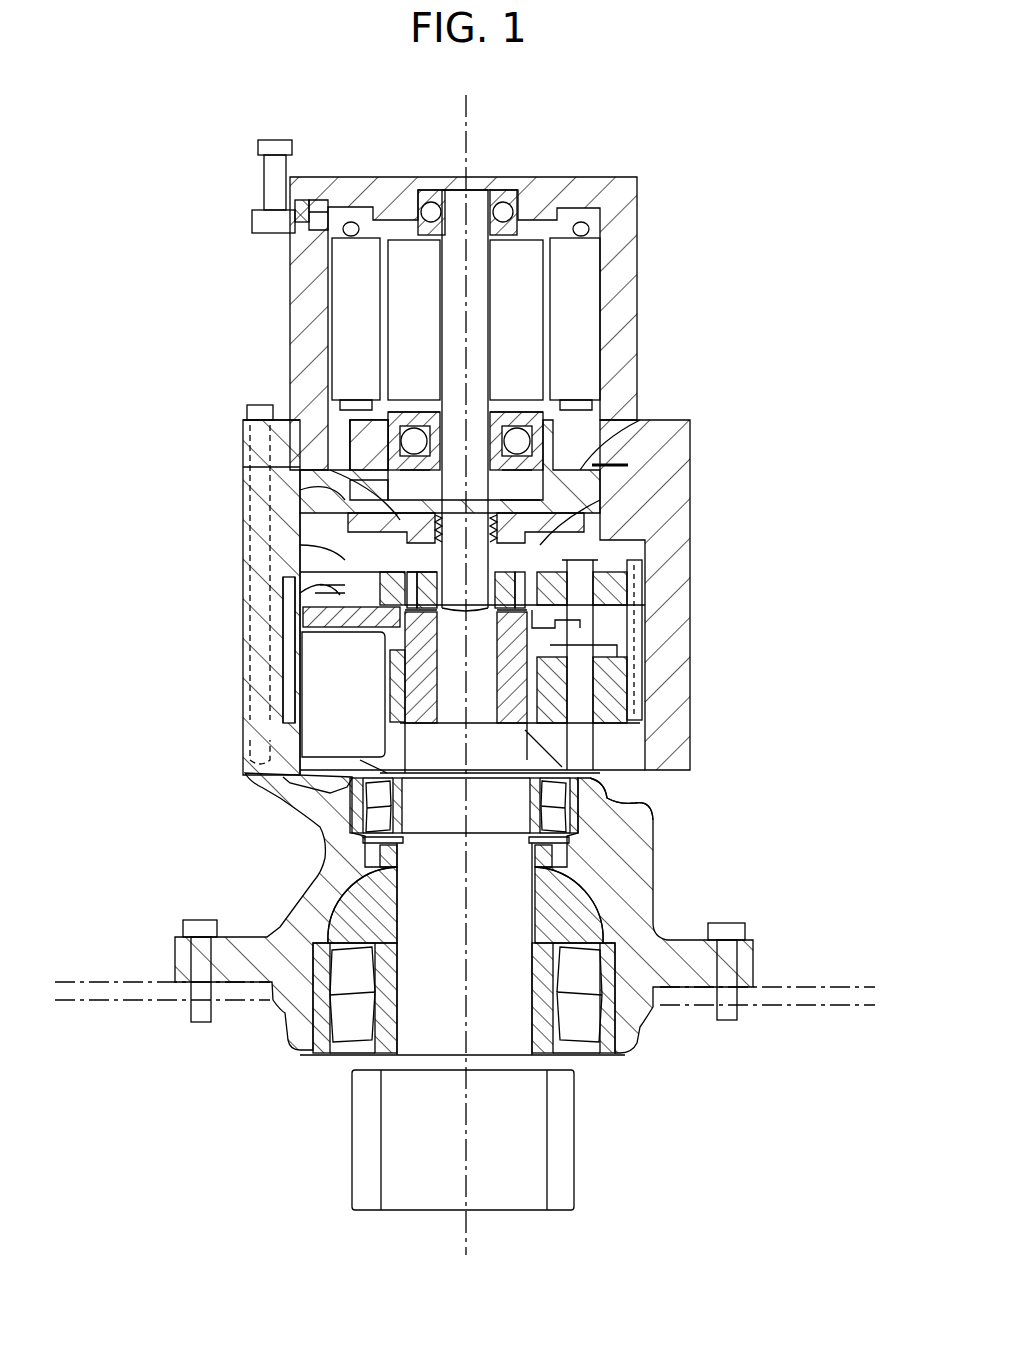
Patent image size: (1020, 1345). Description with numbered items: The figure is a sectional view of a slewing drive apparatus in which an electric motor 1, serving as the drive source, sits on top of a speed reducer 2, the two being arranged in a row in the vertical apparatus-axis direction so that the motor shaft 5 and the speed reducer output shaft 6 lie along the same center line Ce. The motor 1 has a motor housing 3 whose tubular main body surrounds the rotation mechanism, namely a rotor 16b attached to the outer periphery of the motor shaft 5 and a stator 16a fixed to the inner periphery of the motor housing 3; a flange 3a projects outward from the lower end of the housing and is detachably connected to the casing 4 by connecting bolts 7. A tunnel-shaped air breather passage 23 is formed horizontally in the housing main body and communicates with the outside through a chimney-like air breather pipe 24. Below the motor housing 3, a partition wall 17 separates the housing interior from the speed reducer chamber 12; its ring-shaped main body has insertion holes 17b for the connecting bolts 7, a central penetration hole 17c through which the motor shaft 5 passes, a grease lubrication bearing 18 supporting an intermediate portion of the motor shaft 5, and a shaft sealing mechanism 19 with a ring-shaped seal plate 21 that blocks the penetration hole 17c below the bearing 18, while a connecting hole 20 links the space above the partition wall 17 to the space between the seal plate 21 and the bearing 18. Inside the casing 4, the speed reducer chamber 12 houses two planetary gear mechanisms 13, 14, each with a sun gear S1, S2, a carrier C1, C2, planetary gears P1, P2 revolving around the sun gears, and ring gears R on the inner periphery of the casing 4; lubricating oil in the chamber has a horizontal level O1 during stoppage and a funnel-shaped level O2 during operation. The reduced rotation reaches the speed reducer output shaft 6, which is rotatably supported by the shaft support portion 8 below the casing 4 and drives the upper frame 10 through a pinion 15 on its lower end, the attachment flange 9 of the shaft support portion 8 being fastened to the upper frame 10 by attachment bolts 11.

The center line Ce is at (475, 118).
The electric motor 1 is at (290, 316).
The speed reducer 2 is at (232, 660).
The motor housing 3 is at (637, 338).
The flange 3a is at (689, 434).
The casing 4 is at (243, 607).
The motor shaft 5 is at (489, 302).
The speed reducer output shaft 6 is at (323, 938).
The connecting bolts 7 is at (267, 405).
The shaft support portion 8 is at (655, 860).
The attachment flange 9 is at (755, 957).
The upper frame 10 is at (85, 983).
The attachment bolts 11 is at (192, 920).
The speed reducer chamber 12 is at (580, 503).
The planetary gear mechanism 13 is at (705, 567).
The planetary gear mechanism 14 is at (705, 650).
The pinion 15 is at (576, 1168).
The stator 16a is at (590, 265).
The rotor 16b is at (407, 230).
The partition wall 17 is at (243, 493).
The insertion holes 17b is at (238, 466).
The penetration hole 17c is at (376, 500).
The grease lubrication bearing 18 is at (418, 413).
The shaft sealing mechanism 19 is at (518, 507).
The connecting hole 20 is at (245, 437).
The seal plate 21 is at (560, 466).
The air breather passage 23 is at (314, 210).
The air breather pipe 24 is at (266, 180).
The oil level during stoppage O1 is at (330, 595).
The oil level during operation O2 is at (248, 542).
The sun gear S1 is at (368, 555).
The sun gear S2 is at (382, 697).
The planetary gears P1 is at (565, 571).
The planetary gears P2 is at (620, 722).
The carrier C1 is at (378, 690).
The carrier C2 is at (660, 808).
The ring gears R is at (295, 690).